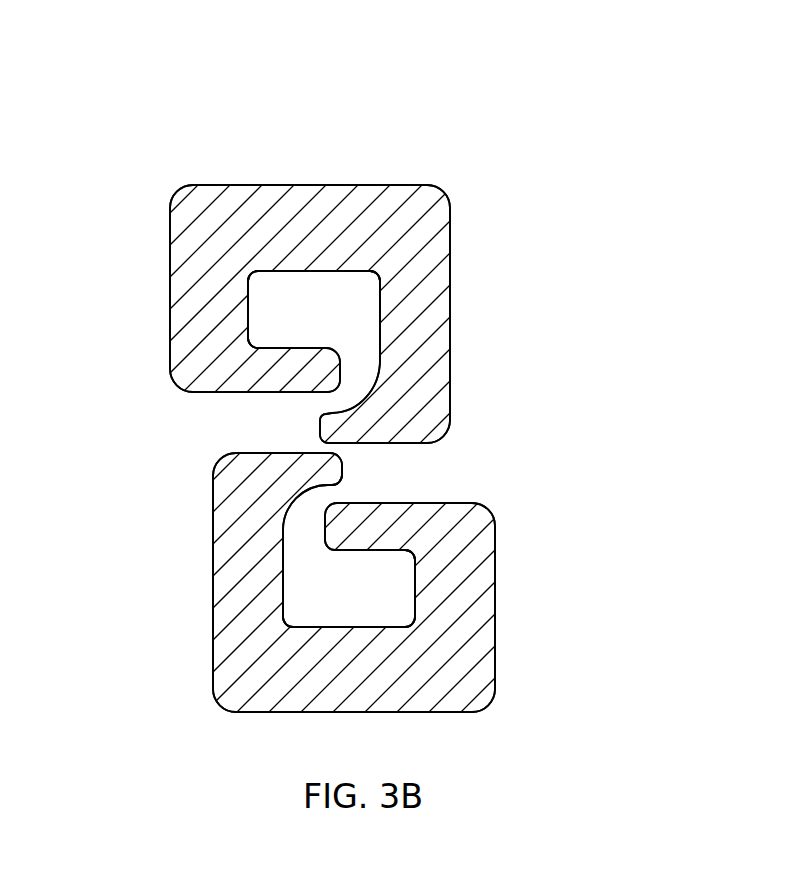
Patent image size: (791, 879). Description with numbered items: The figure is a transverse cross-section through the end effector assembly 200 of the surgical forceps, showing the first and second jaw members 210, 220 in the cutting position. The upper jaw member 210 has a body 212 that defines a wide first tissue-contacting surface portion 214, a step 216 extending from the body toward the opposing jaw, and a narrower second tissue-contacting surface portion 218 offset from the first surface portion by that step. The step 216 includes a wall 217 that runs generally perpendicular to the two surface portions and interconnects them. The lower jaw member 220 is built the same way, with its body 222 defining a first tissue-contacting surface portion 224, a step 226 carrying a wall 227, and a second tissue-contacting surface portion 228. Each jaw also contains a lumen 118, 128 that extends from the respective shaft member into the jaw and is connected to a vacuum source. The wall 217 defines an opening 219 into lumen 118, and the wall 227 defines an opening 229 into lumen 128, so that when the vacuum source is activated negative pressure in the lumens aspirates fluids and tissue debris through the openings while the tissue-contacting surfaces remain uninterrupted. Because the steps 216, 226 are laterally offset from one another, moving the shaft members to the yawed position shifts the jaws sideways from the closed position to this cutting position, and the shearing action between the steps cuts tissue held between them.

The end effector assembly 200 is at (284, 100).
The first jaw member 210 is at (437, 215).
The body 212 is at (392, 200).
The first tissue-contacting surface portion 214 is at (222, 392).
The step 216 is at (290, 424).
The wall 217 is at (323, 437).
The second tissue-contacting surface portion 218 is at (400, 444).
The opening 219 is at (330, 402).
The lumen 118 is at (335, 307).
The second jaw member 220 is at (482, 690).
The body 222 is at (352, 703).
The first tissue-contacting surface portion 224 is at (440, 503).
The step 226 is at (327, 493).
The wall 227 is at (323, 533).
The second tissue-contacting surface portion 228 is at (248, 454).
The opening 229 is at (365, 471).
The lumen 128 is at (385, 583).